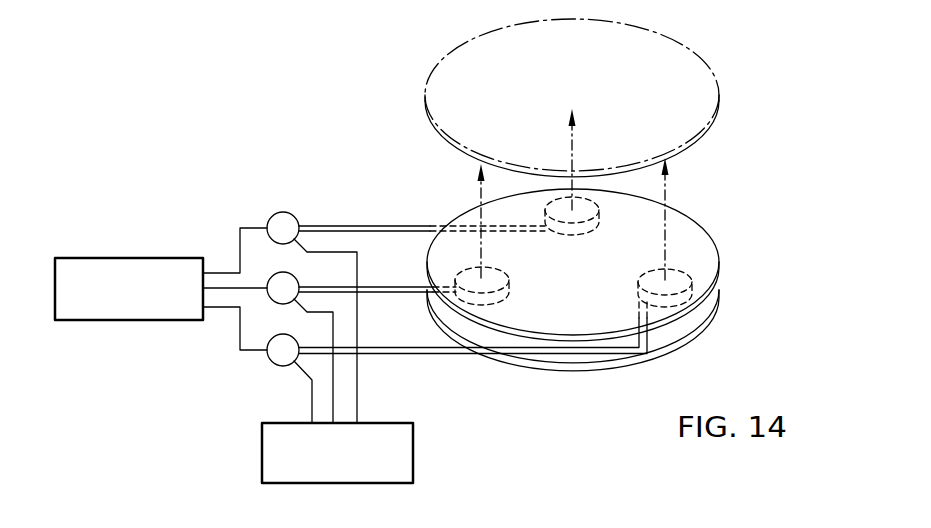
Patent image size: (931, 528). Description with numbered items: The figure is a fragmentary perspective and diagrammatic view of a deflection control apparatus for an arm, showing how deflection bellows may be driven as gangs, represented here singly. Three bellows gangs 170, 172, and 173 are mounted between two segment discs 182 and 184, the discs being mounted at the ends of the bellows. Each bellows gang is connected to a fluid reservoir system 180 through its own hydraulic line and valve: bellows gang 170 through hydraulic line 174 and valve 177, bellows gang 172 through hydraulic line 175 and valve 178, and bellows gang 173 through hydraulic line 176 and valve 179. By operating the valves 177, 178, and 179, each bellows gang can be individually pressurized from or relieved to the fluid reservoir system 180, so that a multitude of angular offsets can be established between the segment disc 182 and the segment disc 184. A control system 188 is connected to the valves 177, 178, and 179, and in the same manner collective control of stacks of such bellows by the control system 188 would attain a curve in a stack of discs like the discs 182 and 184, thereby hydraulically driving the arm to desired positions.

The bellows gang 170 is at (509, 289).
The bellows gang 172 is at (691, 291).
The bellows gang 173 is at (599, 218).
The hydraulic line 174 is at (382, 293).
The hydraulic line 175 is at (417, 357).
The hydraulic line 176 is at (383, 225).
The valve 177 is at (296, 278).
The valve 178 is at (277, 363).
The valve 179 is at (285, 212).
The fluid reservoir system 180 is at (82, 258).
The segment disc 182 is at (594, 333).
The segment disc 184 is at (673, 345).
The control system 188 is at (413, 452).